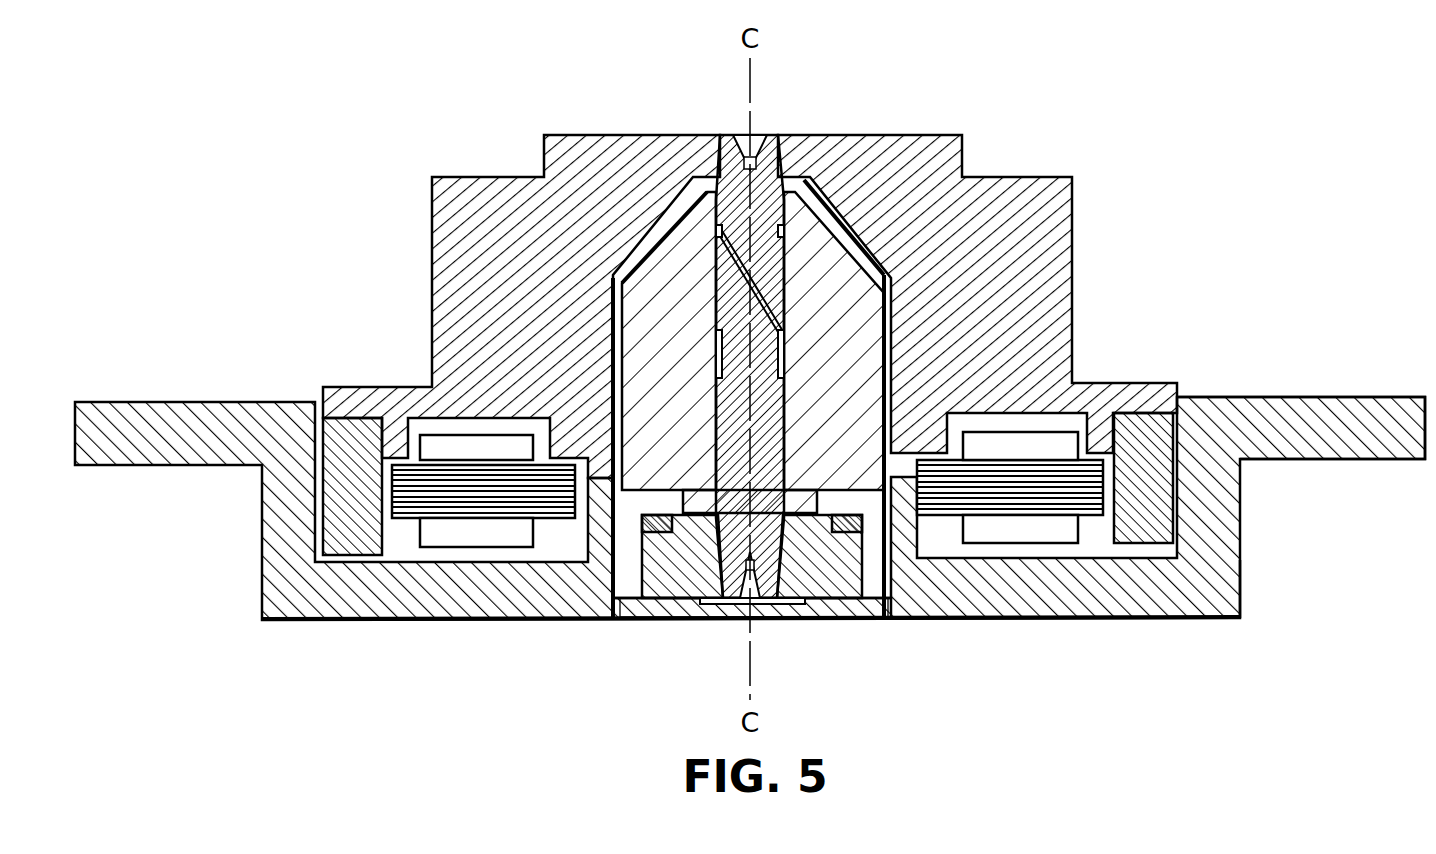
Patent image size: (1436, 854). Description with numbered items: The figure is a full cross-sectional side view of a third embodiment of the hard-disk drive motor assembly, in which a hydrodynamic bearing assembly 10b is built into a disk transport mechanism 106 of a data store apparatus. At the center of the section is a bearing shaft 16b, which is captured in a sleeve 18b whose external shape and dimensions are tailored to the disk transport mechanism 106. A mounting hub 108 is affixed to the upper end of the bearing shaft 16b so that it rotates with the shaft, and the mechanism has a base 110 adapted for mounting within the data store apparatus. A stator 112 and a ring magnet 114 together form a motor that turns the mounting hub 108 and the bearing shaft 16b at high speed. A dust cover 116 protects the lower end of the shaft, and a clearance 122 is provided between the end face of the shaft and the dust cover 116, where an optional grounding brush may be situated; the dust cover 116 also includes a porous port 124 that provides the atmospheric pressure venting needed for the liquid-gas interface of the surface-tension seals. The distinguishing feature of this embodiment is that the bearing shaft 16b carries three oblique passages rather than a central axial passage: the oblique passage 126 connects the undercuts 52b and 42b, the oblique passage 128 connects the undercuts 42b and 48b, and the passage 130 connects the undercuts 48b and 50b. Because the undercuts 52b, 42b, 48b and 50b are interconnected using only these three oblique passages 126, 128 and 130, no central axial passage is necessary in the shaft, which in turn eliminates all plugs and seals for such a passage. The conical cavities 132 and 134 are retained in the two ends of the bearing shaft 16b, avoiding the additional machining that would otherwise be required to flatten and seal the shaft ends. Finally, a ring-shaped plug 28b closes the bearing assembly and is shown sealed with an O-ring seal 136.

The disk transport mechanism 106 is at (316, 255).
The mounting hub 108 is at (876, 133).
The base 110 is at (557, 622).
The stator 112 is at (500, 447).
The ring magnet 114 is at (1157, 457).
The dust cover 116 is at (862, 621).
The bearing assembly 10b is at (768, 134).
The bearing shaft 16b is at (714, 303).
The bearing sleeve 18b is at (670, 222).
The ring-shaped plug 28b is at (644, 621).
The undercut 42b is at (718, 357).
The undercut 48b is at (717, 482).
The undercut 50b is at (790, 517).
The undercut 52b is at (787, 232).
The clearance 122 is at (700, 622).
The porous port 124 is at (752, 621).
The oblique passage 126 is at (786, 312).
The oblique passage 128 is at (770, 405).
The oblique passage 130 is at (780, 487).
The conical cavity 132 is at (740, 133).
The conical cavity 134 is at (727, 621).
The O-ring seal 136 is at (682, 556).